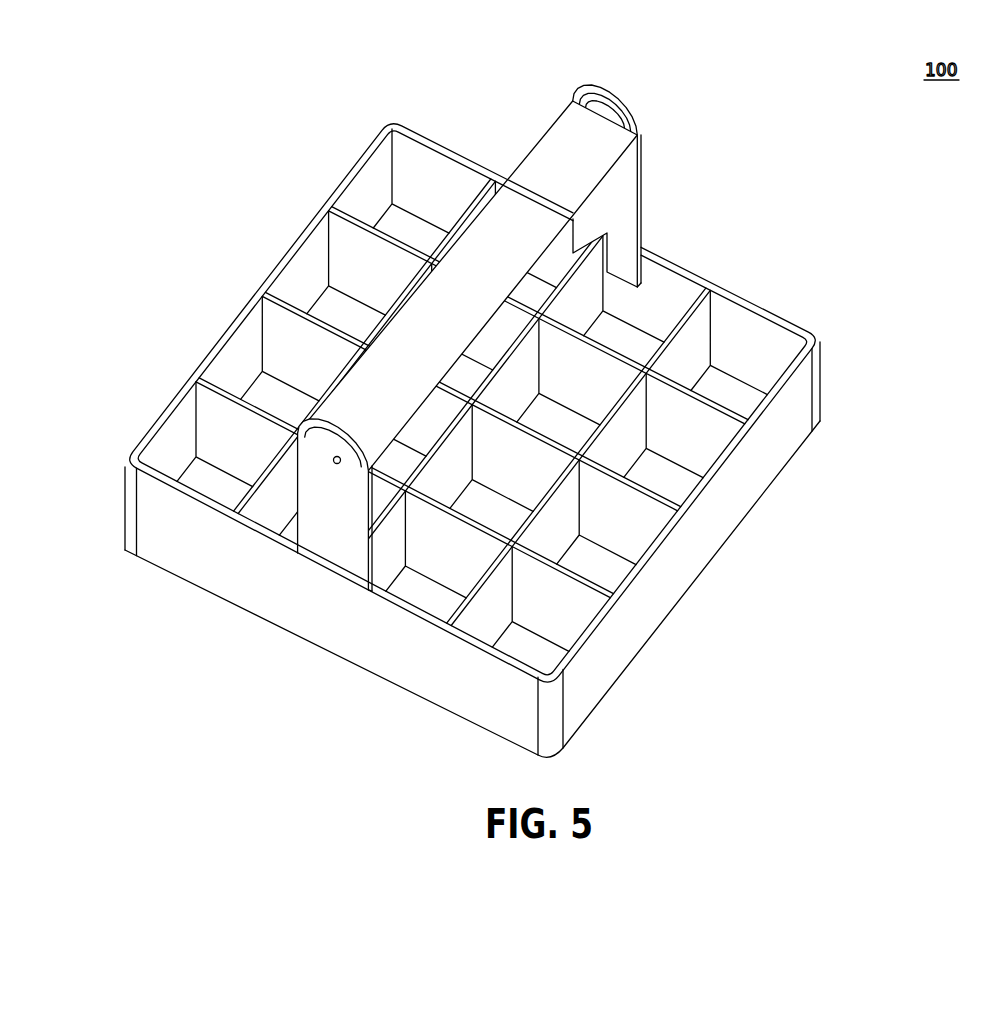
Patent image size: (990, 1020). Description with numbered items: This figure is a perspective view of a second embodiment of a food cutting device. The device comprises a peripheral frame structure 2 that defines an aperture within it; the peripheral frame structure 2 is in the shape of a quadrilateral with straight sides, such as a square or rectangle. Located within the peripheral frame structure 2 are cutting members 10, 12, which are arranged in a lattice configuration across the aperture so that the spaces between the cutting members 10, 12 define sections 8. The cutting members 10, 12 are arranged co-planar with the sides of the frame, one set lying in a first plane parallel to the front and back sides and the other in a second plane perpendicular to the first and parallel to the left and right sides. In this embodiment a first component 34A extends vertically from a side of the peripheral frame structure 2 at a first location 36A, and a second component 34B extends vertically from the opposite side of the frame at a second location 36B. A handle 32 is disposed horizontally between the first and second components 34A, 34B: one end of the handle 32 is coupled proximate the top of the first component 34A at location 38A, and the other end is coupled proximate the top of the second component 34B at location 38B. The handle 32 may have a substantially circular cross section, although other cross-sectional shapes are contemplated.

The peripheral frame structure 2 is at (779, 306).
The sections 8 is at (600, 560).
The cutting member 10 is at (235, 400).
The cutting member 12 is at (617, 406).
The handle 32 is at (554, 126).
The first component 34A is at (327, 530).
The second component 34B is at (645, 186).
The first location 36A is at (335, 578).
The second location 36B is at (643, 241).
The location 38A is at (334, 455).
The location 38B is at (616, 93).